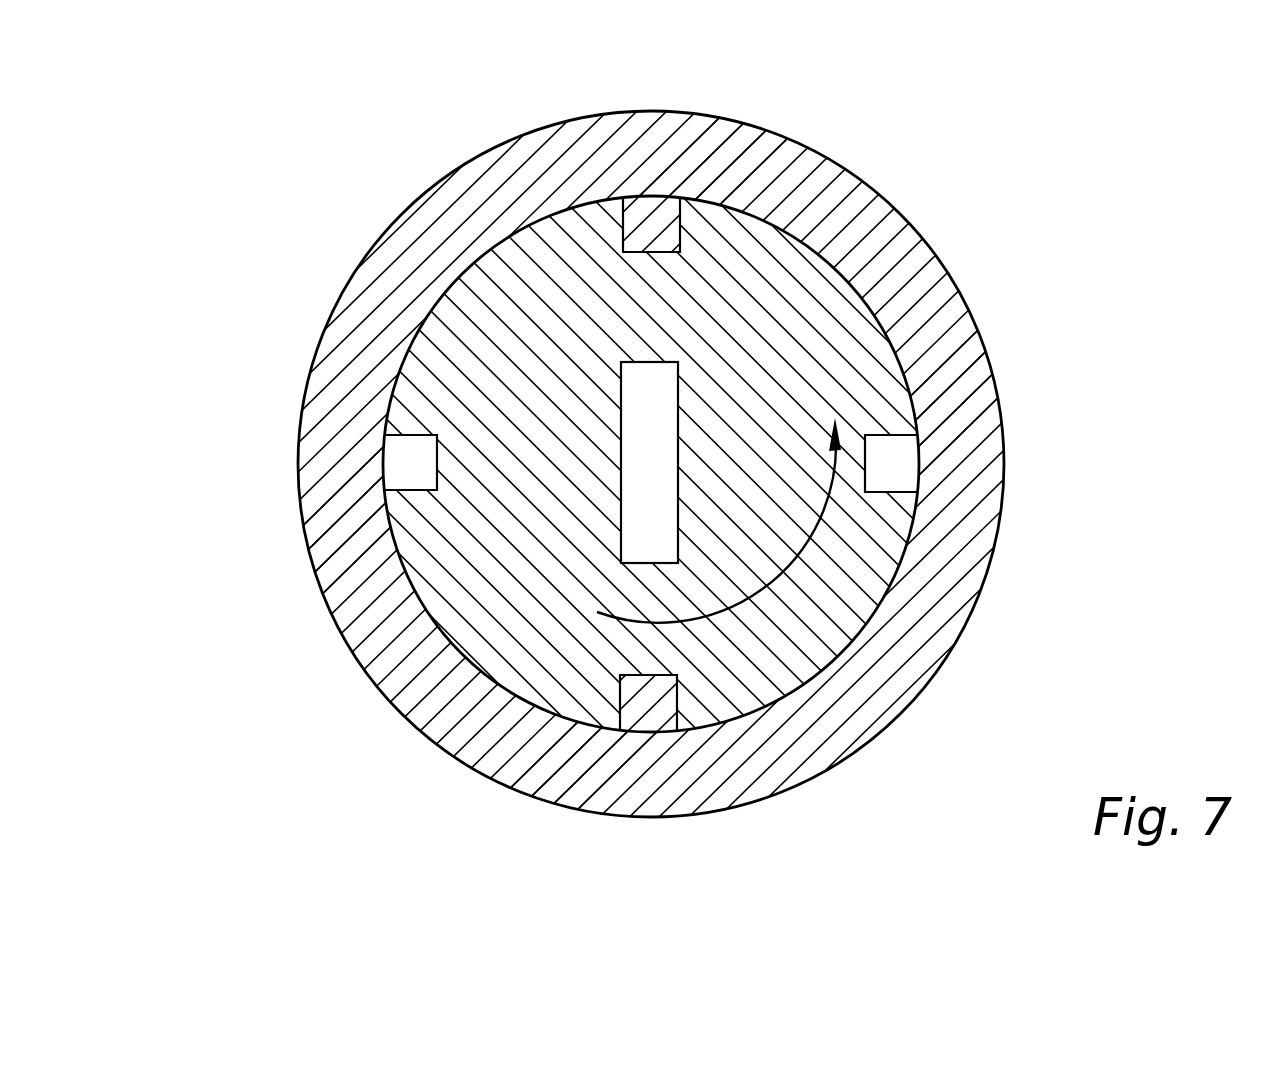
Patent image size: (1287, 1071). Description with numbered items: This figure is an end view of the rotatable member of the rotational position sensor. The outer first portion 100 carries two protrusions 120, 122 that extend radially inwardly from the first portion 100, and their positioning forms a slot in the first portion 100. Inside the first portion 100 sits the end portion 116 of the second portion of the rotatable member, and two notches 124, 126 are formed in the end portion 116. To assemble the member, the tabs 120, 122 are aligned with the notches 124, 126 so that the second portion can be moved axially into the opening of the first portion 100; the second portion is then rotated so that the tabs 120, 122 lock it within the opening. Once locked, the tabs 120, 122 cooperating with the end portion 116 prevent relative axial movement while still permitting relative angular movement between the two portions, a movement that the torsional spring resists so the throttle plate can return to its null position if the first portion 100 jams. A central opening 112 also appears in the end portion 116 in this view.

The first portion 100 is at (582, 157).
The central slot 112 is at (640, 425).
The end portion 116 is at (430, 370).
The protrusion 120 is at (663, 230).
The protrusion 122 is at (643, 702).
The notch 124 is at (900, 462).
The notch 126 is at (397, 467).